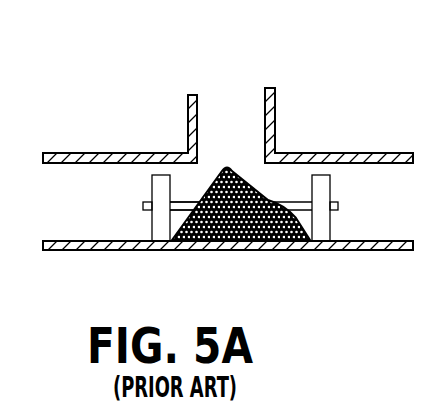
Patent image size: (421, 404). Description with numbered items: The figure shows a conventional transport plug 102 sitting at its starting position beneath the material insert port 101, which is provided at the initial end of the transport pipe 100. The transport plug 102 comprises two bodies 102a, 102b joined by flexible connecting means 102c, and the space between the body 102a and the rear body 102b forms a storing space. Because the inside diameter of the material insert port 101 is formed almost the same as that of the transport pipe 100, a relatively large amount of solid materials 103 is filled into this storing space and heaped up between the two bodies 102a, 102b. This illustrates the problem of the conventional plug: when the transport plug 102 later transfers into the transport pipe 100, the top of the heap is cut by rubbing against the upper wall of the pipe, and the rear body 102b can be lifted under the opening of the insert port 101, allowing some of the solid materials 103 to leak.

The transport pipe 100 is at (365, 249).
The material insert port 101 is at (188, 138).
The transport plug 102 is at (222, 249).
The body 102a is at (323, 249).
The rear body 102b is at (175, 244).
The flexible connecting means 102c is at (152, 196).
The solid materials 103 is at (254, 190).